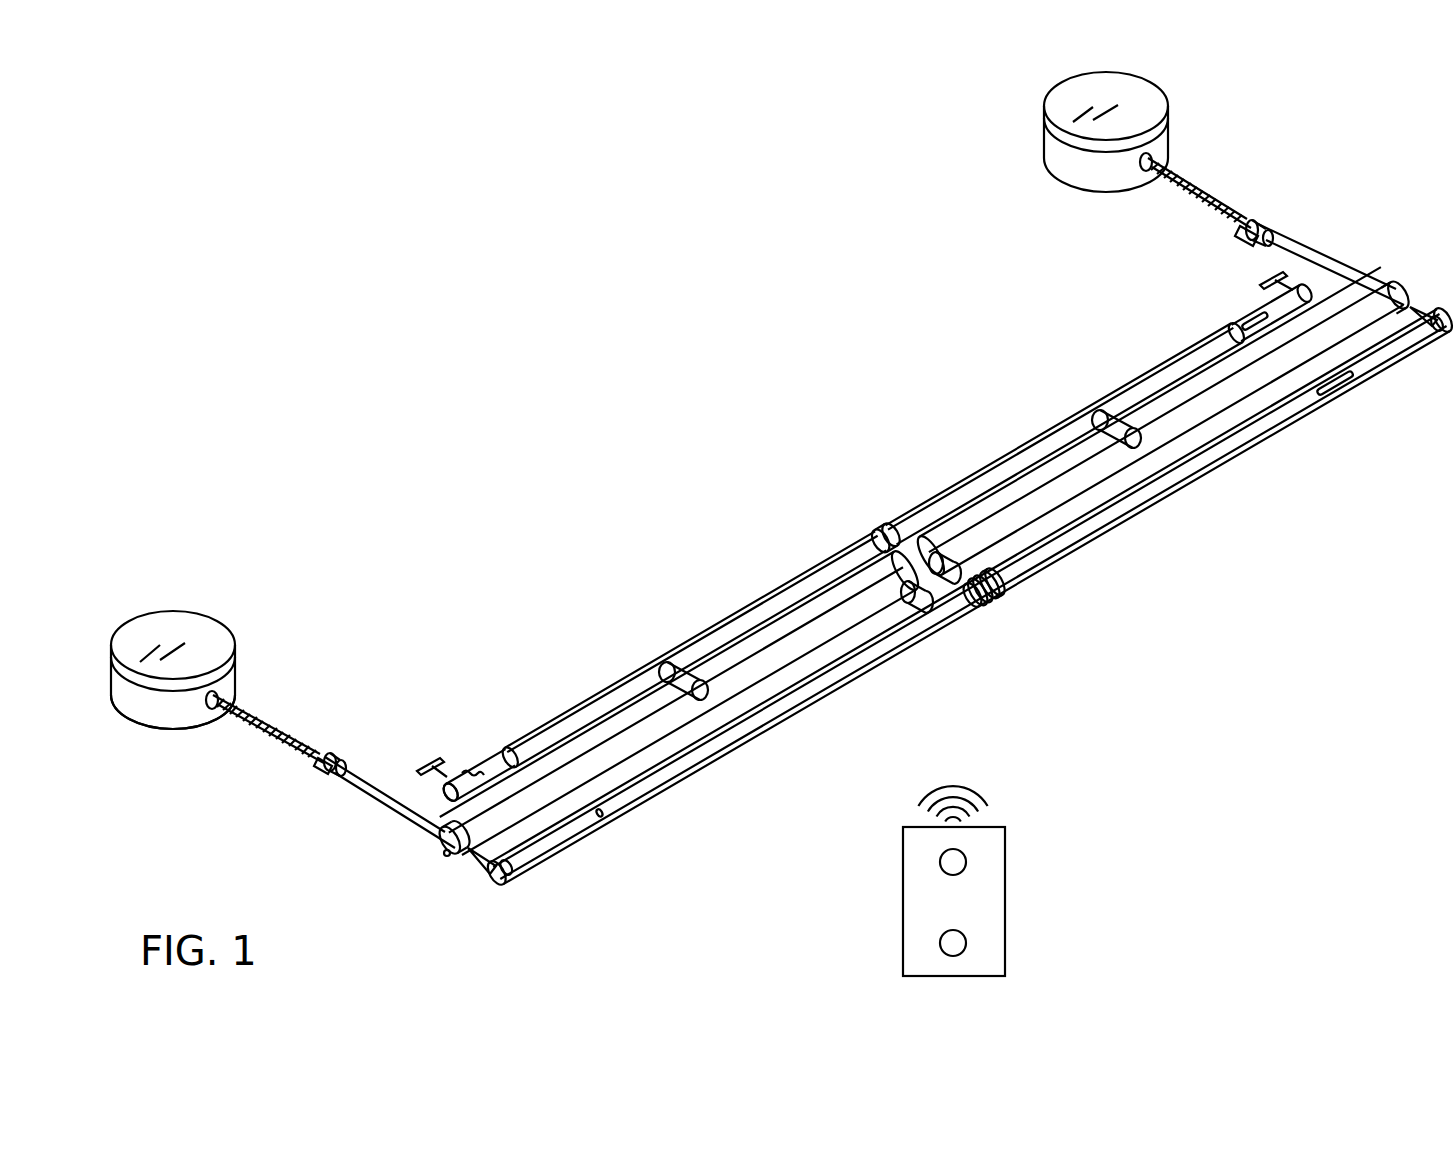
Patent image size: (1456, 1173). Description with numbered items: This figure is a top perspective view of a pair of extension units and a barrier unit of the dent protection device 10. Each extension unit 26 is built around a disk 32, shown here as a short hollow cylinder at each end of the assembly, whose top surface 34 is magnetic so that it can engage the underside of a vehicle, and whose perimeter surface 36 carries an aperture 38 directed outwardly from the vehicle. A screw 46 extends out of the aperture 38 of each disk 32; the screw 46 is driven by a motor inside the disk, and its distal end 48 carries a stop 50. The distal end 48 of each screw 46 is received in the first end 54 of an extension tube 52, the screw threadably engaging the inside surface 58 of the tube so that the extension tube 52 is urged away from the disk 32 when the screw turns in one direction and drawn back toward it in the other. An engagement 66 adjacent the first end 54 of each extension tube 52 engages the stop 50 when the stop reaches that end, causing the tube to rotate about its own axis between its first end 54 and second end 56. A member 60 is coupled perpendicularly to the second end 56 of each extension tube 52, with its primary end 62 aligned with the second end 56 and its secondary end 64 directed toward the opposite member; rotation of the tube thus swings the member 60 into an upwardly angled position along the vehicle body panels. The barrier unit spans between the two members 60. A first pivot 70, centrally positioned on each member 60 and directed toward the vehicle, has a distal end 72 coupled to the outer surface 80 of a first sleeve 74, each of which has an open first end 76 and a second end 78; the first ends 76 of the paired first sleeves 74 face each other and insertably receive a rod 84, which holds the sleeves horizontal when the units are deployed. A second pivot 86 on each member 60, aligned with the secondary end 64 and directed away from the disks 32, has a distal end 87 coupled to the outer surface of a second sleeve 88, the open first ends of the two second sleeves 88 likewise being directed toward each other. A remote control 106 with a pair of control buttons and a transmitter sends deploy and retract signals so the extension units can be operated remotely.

The dent protection device 10 is at (1181, 736).
The extension unit 26 is at (357, 698).
The disk 32 is at (215, 720).
The top surface 34 is at (165, 622).
The perimeter surface 36 is at (146, 706).
The aperture 38 is at (228, 658).
The screw 46 is at (277, 740).
The distal end 48 is at (347, 787).
The stop 50 is at (333, 757).
The extension tube 52 is at (432, 852).
The first end 54 is at (322, 755).
The second end 56 is at (462, 850).
The inside surface 58 is at (367, 783).
The member 60 is at (747, 657).
The primary end 62 is at (447, 855).
The secondary end 64 is at (980, 587).
The engagement 66 is at (350, 753).
The first pivot 70 is at (695, 670).
The distal end 72 is at (667, 673).
The first sleeve 74 is at (511, 742).
The first end 76 is at (870, 536).
The second end 78 is at (450, 797).
The outer surface 80 is at (470, 777).
The rod 84 is at (885, 530).
The second pivot 86 is at (913, 600).
The distal end 87 is at (950, 607).
The second sleeve 88 is at (587, 837).
The remote control 106 is at (1000, 888).